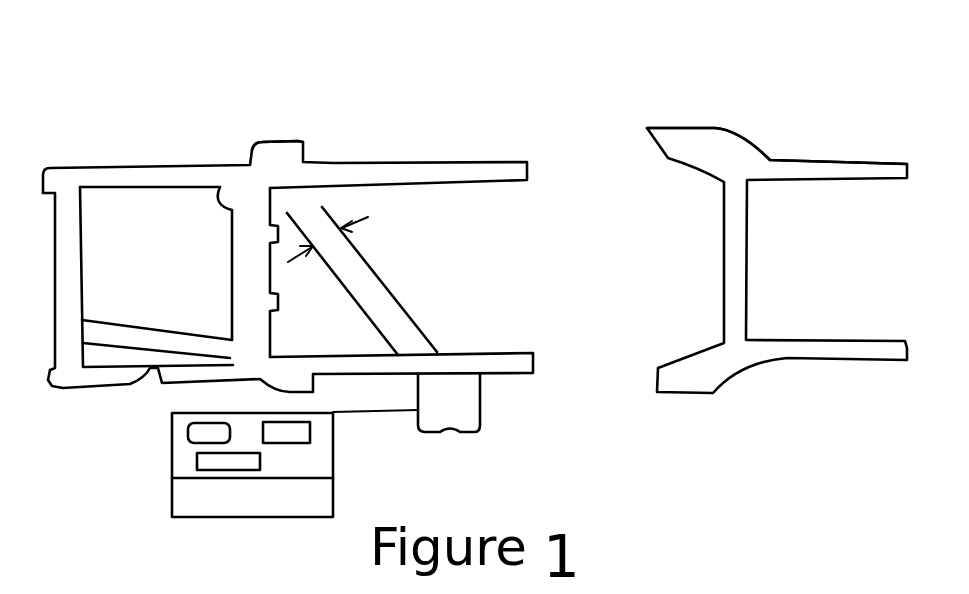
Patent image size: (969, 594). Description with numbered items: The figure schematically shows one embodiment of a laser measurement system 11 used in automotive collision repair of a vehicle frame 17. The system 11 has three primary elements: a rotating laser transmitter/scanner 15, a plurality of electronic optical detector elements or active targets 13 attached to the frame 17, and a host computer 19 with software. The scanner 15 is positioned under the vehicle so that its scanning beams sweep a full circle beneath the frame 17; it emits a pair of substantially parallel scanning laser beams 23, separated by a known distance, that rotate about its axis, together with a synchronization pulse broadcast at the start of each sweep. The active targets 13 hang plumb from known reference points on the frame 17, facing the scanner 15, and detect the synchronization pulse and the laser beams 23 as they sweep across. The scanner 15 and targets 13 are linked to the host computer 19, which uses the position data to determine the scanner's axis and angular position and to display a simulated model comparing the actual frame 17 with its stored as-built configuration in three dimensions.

The laser measurement system 11 is at (513, 115).
The active targets 13 is at (63, 178).
The rotating laser transmitter/scanner 15 is at (466, 422).
The vehicle frame 17 is at (333, 163).
The host computer 19 is at (165, 503).
The parallel scanning laser beams 23 is at (362, 252).